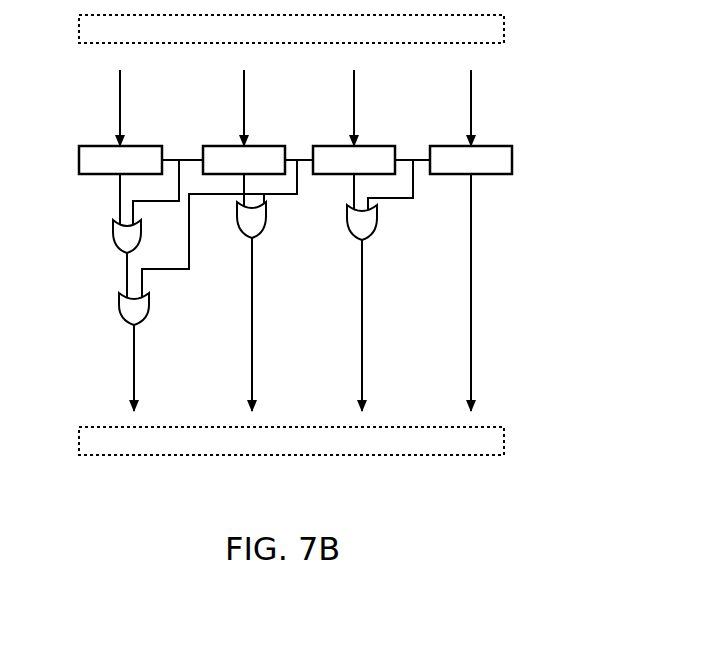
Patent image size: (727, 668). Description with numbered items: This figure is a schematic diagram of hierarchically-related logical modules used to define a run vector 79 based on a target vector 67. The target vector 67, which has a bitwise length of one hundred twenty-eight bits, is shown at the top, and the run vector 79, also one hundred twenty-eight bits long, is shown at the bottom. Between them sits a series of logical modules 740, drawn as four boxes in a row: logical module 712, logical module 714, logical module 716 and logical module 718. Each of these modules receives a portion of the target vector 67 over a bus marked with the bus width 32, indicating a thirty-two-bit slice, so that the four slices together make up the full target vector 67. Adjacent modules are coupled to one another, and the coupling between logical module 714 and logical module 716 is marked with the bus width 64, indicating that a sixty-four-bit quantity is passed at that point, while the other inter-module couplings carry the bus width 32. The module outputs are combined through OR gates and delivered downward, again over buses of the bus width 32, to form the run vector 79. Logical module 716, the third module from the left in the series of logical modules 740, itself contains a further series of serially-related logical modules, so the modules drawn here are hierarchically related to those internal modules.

The target vector 67 is at (377, 39).
The run vector 79 is at (366, 450).
The logical module 712 is at (101, 170).
The logical module 714 is at (225, 170).
The logical module 716 is at (335, 170).
The logical module 718 is at (452, 170).
The series of logical modules 740 is at (540, 162).
The 32-bit bus width 32 is at (114, 113).
The 64-bit bus width 64 is at (302, 176).